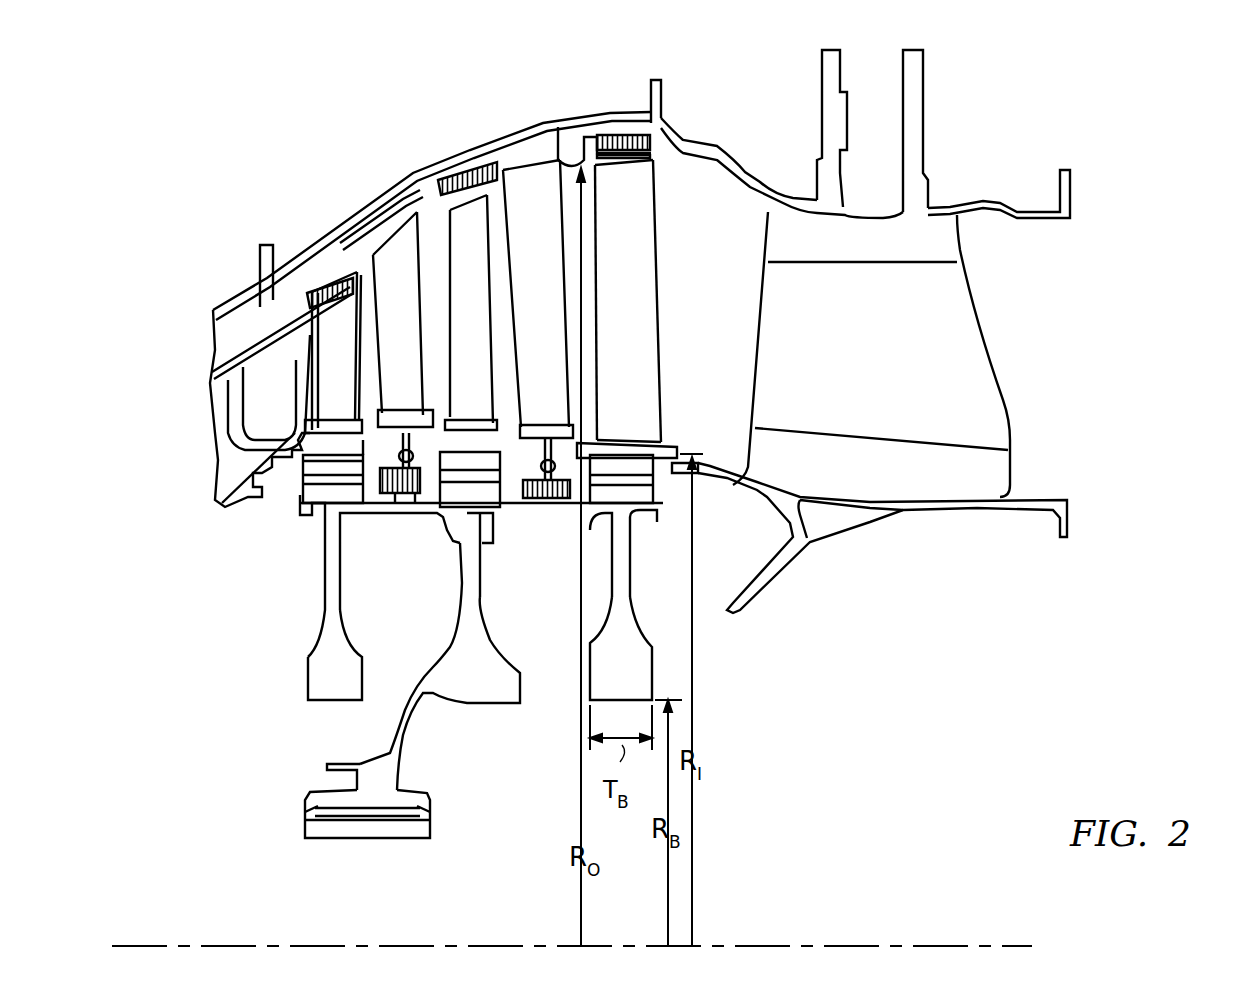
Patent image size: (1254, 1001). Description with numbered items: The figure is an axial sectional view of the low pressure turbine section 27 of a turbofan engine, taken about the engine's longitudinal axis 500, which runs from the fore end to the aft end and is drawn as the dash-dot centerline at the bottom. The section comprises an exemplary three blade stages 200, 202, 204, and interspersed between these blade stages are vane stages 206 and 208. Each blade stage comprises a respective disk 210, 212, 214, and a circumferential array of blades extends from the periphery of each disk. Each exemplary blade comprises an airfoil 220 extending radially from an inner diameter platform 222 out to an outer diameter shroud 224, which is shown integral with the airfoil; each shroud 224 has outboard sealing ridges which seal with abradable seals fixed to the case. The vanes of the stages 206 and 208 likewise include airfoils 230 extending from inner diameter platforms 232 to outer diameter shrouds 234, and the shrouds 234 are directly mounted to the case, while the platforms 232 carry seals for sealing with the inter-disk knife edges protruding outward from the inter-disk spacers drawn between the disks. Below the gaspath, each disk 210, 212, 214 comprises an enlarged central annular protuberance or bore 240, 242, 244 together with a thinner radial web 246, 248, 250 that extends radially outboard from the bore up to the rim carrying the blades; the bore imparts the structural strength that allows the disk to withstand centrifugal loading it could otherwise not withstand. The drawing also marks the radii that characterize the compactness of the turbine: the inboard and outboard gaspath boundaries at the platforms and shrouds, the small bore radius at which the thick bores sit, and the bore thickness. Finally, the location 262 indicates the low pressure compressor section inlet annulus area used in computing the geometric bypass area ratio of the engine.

The low pressure turbine section 27 is at (421, 128).
The blade stage 200 is at (328, 340).
The blade stage 202 is at (471, 244).
The blade stage 204 is at (684, 250).
The vane stage 206 is at (393, 308).
The vane stage 208 is at (543, 280).
The disk 210 is at (337, 620).
The disk 212 is at (431, 675).
The disk 214 is at (648, 605).
The airfoil 220 is at (684, 301).
The inner diameter platform 222 is at (663, 447).
The outer diameter shroud 224 is at (643, 173).
The airfoil 230 is at (547, 317).
The inner diameter platform 232 is at (570, 440).
The outer diameter shroud 234 is at (558, 160).
The bore 240 is at (320, 683).
The bore 242 is at (487, 687).
The bore 244 is at (633, 670).
The radial web 246 is at (333, 602).
The radial web 248 is at (470, 627).
The radial web 250 is at (620, 590).
The low pressure compressor section inlet annulus location 262 is at (300, 368).
The longitudinal axis 500 is at (913, 946).